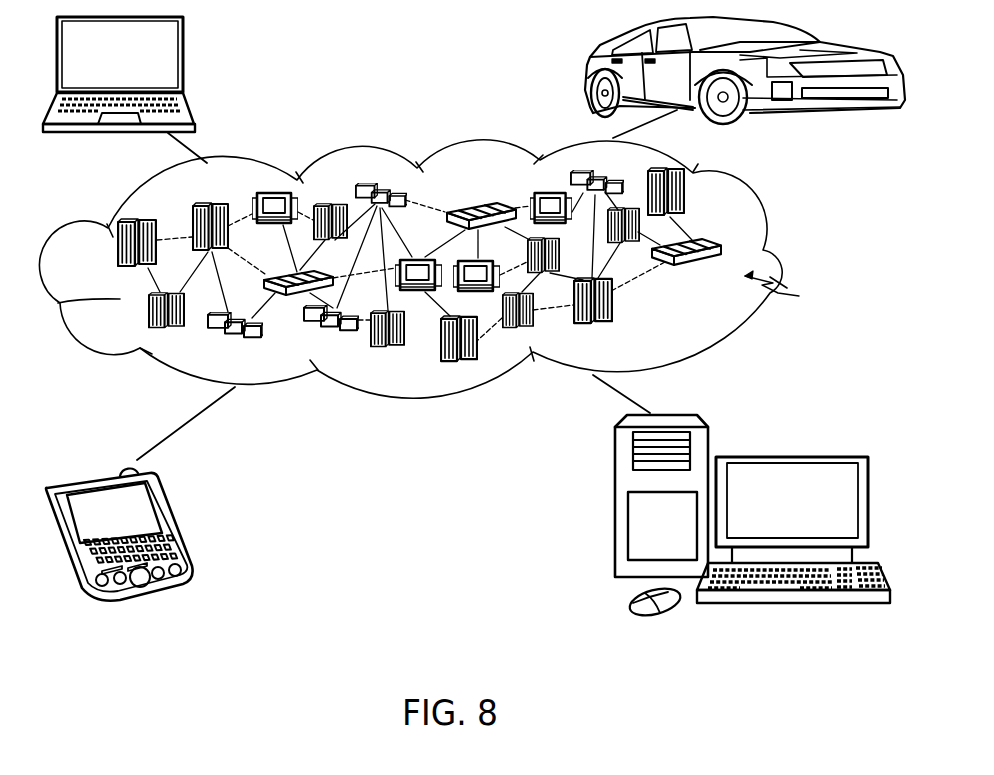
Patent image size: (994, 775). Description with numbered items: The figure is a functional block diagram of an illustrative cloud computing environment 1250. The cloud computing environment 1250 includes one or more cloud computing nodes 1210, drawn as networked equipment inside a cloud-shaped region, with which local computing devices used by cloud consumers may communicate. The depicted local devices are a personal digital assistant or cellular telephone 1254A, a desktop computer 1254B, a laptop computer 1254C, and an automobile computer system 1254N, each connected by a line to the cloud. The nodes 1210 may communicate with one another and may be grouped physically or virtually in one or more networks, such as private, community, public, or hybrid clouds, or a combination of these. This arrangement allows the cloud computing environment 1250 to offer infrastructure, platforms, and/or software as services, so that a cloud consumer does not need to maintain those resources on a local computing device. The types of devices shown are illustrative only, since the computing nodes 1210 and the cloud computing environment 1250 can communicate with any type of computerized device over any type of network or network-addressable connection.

The personal digital assistant or cellular telephone 1254A is at (175, 521).
The desktop computer 1254B is at (800, 438).
The laptop computer 1254C is at (185, 61).
The automobile computer system 1254N is at (588, 72).
The cloud computing environment 1250 is at (795, 254).
The cloud computing nodes 1210 is at (790, 289).